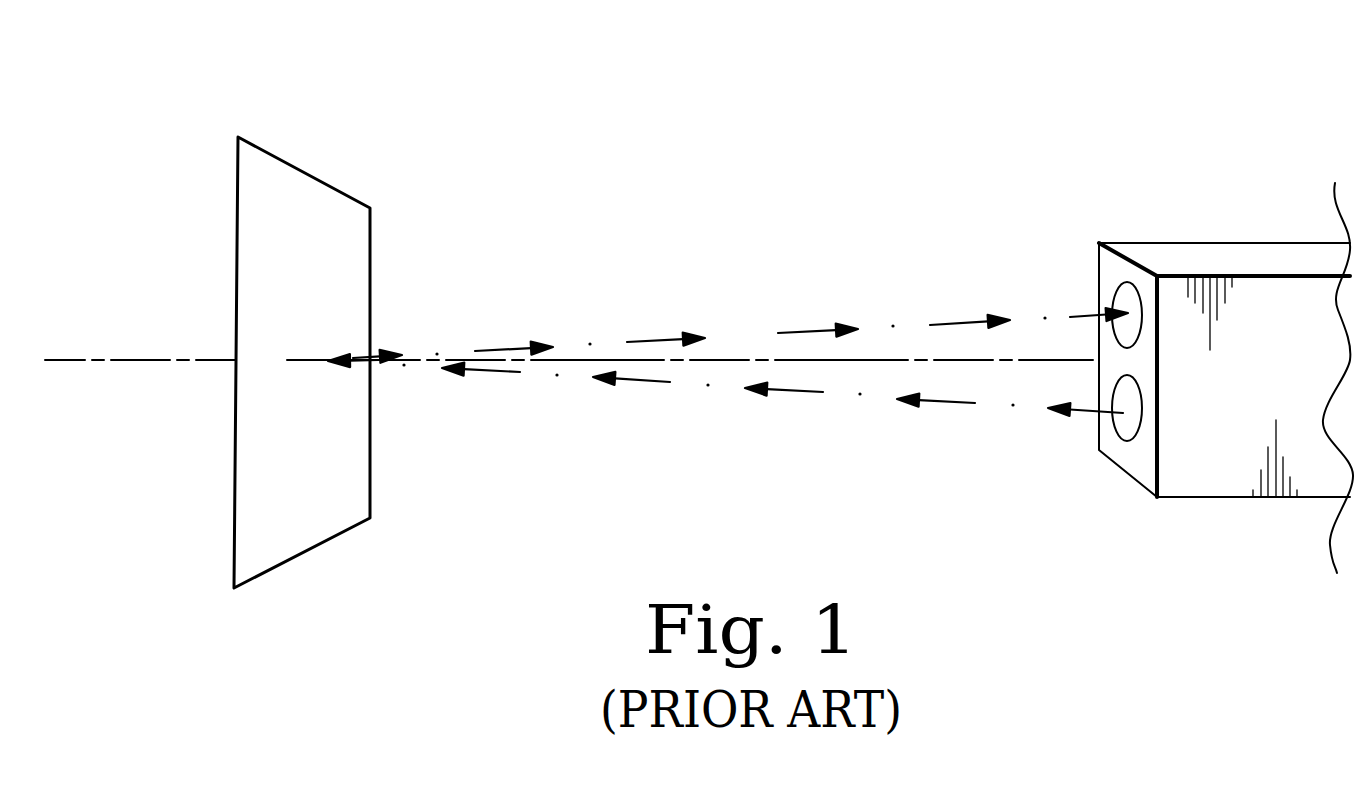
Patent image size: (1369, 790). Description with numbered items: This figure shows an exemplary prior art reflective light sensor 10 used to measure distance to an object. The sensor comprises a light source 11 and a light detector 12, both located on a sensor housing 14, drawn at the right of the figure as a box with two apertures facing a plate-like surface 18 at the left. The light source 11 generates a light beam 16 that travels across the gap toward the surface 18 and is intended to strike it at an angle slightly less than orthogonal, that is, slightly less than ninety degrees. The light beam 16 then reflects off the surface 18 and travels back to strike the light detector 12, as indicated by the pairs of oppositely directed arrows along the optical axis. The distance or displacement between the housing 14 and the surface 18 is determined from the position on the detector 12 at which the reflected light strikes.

The reflective light sensor 10 is at (1054, 126).
The light source 11 is at (1112, 425).
The light detector 12 is at (1112, 295).
The sensor housing 14 is at (1222, 252).
The light beam 16 is at (798, 393).
The surface 18 is at (300, 171).